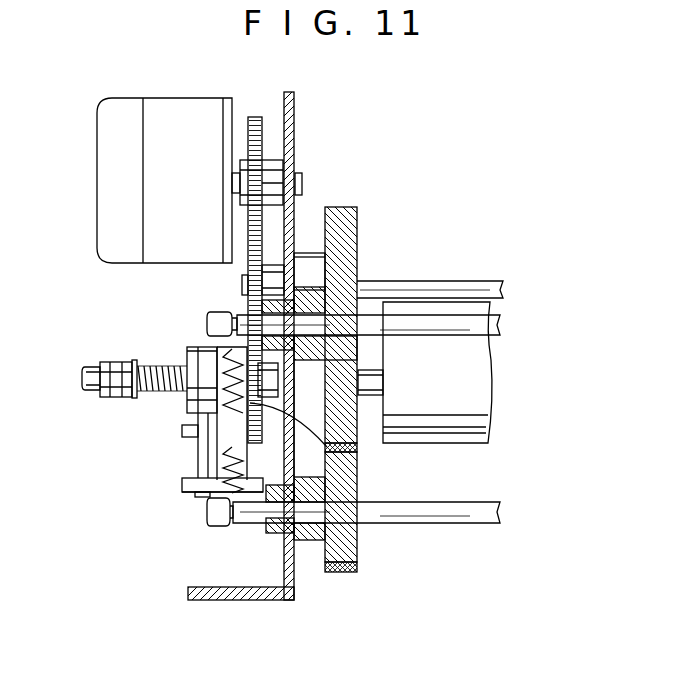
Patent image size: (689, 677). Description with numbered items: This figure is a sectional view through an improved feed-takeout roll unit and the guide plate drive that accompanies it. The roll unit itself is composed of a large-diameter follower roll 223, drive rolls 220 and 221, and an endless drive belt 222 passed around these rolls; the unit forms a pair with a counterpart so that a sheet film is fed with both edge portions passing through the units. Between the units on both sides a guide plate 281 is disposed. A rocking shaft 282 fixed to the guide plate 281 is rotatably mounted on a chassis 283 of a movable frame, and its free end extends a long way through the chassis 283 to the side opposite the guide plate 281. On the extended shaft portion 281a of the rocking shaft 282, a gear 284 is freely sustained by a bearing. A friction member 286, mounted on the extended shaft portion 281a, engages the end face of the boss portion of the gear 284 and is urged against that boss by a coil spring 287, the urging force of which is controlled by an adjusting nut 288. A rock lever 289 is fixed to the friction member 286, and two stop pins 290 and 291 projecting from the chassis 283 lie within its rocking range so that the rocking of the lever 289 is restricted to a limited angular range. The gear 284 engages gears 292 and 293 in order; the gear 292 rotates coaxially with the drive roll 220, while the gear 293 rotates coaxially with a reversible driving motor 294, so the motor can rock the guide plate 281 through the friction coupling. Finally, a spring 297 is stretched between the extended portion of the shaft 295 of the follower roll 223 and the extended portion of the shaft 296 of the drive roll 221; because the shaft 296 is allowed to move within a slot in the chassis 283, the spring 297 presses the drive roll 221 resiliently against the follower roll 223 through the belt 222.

The reversible driving motor 294 is at (170, 112).
The gear 293 is at (254, 116).
The chassis 283 is at (294, 116).
The drive roll 220 is at (310, 260).
The large-diameter follower roll 223 is at (357, 248).
The gear 284 is at (340, 452).
The drive roll 221 is at (356, 549).
The endless drive belt 222 is at (343, 572).
The shaft 295 is at (496, 330).
The guide plate 281 is at (480, 412).
The rocking shaft 282 is at (368, 398).
The shaft 296 is at (472, 518).
The gear 292 is at (248, 270).
The friction member 286 is at (200, 356).
The coil spring 287 is at (150, 364).
The adjusting nut 288 is at (112, 398).
The extended shaft portion 281a is at (160, 392).
The stop pin 291 is at (182, 432).
The rock lever 289 is at (198, 458).
The stop pin 290 is at (190, 493).
The spring 297 is at (245, 500).